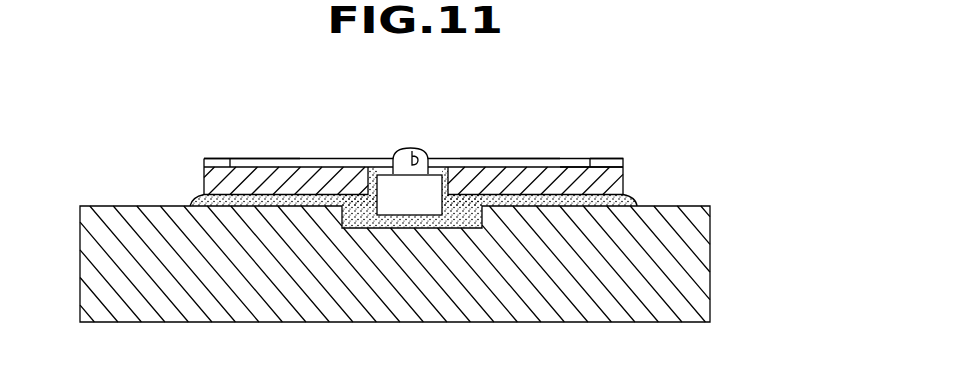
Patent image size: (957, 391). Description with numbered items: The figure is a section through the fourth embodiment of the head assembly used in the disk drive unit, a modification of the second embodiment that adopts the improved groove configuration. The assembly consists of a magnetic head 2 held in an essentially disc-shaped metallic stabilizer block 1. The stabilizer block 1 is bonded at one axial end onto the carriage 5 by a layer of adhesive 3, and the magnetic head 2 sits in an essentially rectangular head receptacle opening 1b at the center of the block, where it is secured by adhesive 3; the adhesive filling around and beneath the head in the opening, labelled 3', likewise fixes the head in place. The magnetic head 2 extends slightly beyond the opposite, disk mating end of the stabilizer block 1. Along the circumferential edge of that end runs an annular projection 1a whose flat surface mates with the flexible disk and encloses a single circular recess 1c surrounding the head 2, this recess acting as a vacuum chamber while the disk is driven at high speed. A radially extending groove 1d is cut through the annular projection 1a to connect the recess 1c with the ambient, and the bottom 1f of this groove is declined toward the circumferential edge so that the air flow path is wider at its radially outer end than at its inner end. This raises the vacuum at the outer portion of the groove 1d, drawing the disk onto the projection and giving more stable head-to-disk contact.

The stabilizer block 1 is at (293, 200).
The annular projection 1a is at (222, 158).
The head receptacle opening 1b is at (375, 158).
The circular recess 1c is at (510, 158).
The radially extending groove 1d is at (605, 158).
The bottom of the radially extending groove 1f is at (608, 166).
The magnetic head 2 is at (402, 155).
The adhesive 3 is at (439, 198).
The solder filling 3' is at (418, 267).
The carriage 5 is at (683, 287).